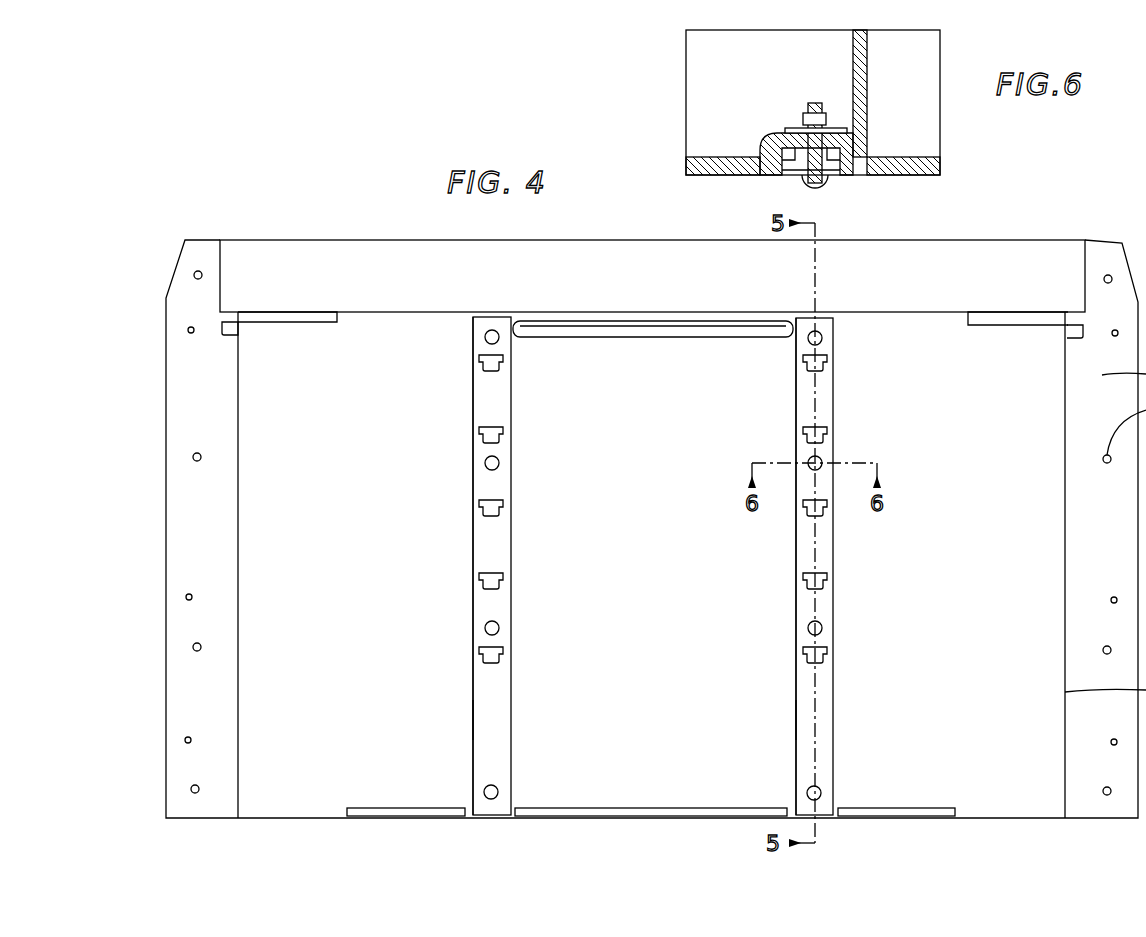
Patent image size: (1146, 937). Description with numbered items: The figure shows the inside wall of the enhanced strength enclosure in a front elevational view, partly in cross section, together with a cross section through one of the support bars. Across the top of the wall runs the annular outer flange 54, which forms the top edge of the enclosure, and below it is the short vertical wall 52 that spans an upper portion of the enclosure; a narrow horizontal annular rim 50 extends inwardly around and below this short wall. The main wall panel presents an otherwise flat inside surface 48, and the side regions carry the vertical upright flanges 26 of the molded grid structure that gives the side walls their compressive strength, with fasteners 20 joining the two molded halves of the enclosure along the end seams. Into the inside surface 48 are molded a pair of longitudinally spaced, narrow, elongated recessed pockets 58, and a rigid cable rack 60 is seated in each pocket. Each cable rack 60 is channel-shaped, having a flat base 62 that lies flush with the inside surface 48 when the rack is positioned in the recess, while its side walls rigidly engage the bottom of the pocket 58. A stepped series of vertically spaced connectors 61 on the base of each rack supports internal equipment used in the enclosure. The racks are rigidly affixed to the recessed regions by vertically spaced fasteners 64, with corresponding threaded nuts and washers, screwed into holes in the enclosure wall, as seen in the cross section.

In FIG. 4, the fasteners 20 is at (201, 457).
In FIG. 4, the vertical upright flanges 26 is at (205, 532).
In FIG. 6, the vertical upright flanges 26 is at (867, 70).
In FIG. 4, the inside surface 48 is at (638, 576).
In FIG. 6, the inside surface 48 is at (930, 175).
In FIG. 4, the horizontal annular rim 50 is at (872, 312).
In FIG. 4, the short vertical wall 52 is at (1075, 312).
In FIG. 4, the annular outer flange 54 is at (380, 240).
In FIG. 4, the recessed pockets 58 is at (480, 708).
In FIG. 6, the recessed pockets 58 is at (790, 177).
In FIG. 4, the cable racks 60 is at (512, 482).
In FIG. 6, the cable racks 60 is at (778, 198).
In FIG. 4, the connectors 61 is at (495, 430).
In FIG. 4, the flat base 62 is at (490, 605).
In FIG. 6, the flat base 62 is at (837, 177).
In FIG. 4, the fasteners 64 is at (485, 463).
In FIG. 6, the fasteners 64 is at (808, 105).